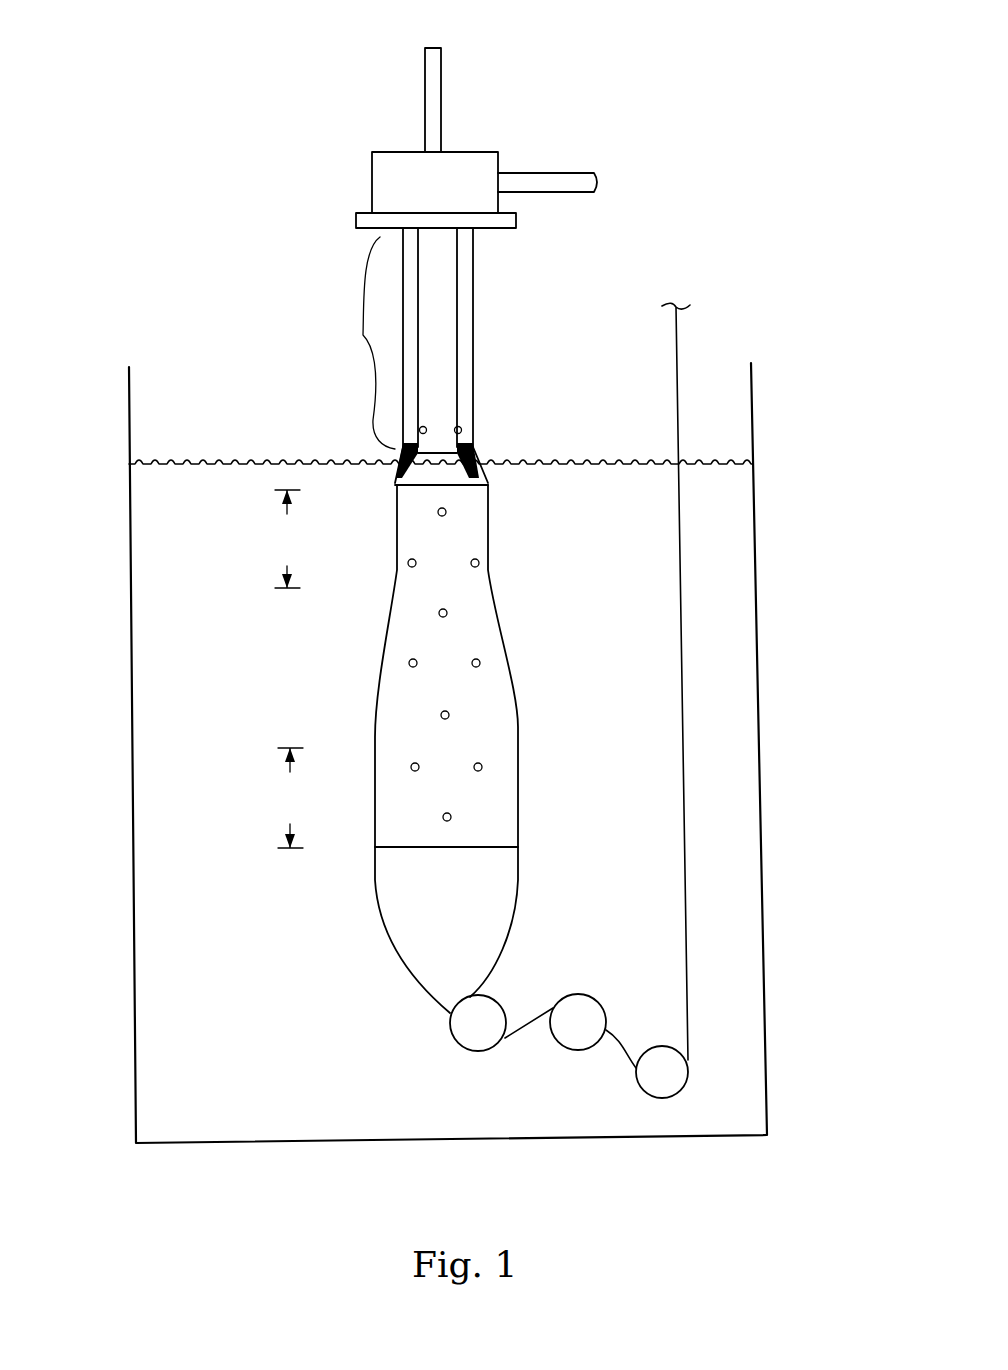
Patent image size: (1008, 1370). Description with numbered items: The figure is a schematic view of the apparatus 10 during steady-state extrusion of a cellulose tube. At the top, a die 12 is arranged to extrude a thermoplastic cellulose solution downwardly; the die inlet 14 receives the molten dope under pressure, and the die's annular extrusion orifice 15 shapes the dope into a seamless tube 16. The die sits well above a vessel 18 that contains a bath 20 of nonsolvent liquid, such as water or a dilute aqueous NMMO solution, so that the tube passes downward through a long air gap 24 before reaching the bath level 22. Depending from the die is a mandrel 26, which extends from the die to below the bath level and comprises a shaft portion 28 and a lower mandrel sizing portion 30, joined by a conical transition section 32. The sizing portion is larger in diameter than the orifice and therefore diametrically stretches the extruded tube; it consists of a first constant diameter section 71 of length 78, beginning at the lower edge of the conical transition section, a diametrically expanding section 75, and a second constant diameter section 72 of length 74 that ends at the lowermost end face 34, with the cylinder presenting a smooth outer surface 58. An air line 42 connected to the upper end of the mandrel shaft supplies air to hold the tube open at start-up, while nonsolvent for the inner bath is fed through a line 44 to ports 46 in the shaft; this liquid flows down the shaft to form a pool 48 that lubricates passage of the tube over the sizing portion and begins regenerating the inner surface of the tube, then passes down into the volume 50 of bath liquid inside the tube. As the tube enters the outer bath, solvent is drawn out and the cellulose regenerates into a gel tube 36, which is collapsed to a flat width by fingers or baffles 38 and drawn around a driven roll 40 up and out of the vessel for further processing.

The apparatus 10 is at (692, 146).
The die 12 is at (372, 183).
The die inlet 14 is at (532, 173).
The annular extrusion orifice 15 is at (483, 227).
The seamless tube 16 is at (473, 335).
The vessel 18 is at (758, 580).
The bath 20 is at (598, 694).
The bath level 22 is at (582, 463).
The air gap 24 is at (355, 343).
The mandrel 26 is at (443, 275).
The mandrel shaft 28 is at (602, 993).
The mandrel sizing portion 30 is at (441, 749).
The conical transition section 32 is at (457, 477).
The lowermost end face 34 is at (435, 847).
The gel tube 36 is at (677, 372).
The fingers or baffles 38 is at (457, 1042).
The driven roll 40 is at (680, 1090).
The air line 42 is at (425, 109).
The line 44 is at (441, 93).
The ports 46 is at (461, 430).
The pool 48 is at (403, 458).
The volume of bath liquid 50 is at (492, 937).
The outer surface 58 is at (518, 790).
The constant diameter section 71 is at (397, 538).
The constant diameter section 72 is at (375, 828).
The length 74 is at (289, 798).
The diametrically expanding section 75 is at (382, 682).
The length 78 is at (286, 539).